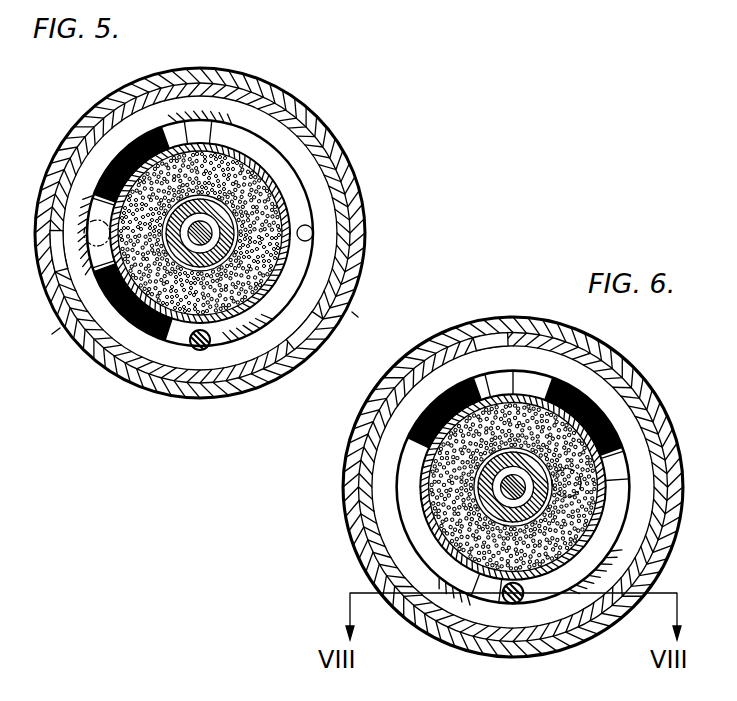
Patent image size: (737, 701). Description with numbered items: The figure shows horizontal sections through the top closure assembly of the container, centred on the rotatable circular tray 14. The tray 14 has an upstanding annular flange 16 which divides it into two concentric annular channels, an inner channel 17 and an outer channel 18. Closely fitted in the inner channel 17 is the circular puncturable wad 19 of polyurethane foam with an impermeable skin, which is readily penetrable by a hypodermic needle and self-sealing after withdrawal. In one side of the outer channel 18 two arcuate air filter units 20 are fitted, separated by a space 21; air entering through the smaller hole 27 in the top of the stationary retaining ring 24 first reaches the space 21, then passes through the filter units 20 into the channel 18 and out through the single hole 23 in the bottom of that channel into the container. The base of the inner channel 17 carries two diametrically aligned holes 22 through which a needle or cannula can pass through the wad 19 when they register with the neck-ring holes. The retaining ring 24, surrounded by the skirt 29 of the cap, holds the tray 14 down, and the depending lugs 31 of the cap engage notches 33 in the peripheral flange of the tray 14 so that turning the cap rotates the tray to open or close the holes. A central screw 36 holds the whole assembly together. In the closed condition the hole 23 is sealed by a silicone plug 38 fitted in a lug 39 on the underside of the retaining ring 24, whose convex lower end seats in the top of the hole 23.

In FIG. 5, the rotatable circular tray 14 is at (106, 350).
In FIG. 5, the upstanding annular flange 16 is at (272, 175).
In FIG. 5, the inner channel 17 is at (237, 160).
In FIG. 5, the outer channel 18 is at (203, 125).
In FIG. 6, the outer channel 18 is at (605, 535).
In FIG. 5, the puncturable wad 19 is at (186, 160).
In FIG. 6, the puncturable wad 19 is at (440, 522).
In FIG. 5, the air filter units 20 is at (115, 165).
In FIG. 6, the air filter units 20 is at (418, 420).
In FIG. 5, the space 21 is at (96, 285).
In FIG. 5, the holes 22 is at (60, 328).
In FIG. 5, the hole 23 is at (313, 232).
In FIG. 5, the stationary retaining ring 24 is at (216, 352).
In FIG. 6, the stationary retaining ring 24 is at (448, 505).
In FIG. 5, the smaller hole 27 is at (86, 240).
In FIG. 5, the skirt 29 is at (262, 352).
In FIG. 6, the skirt 29 is at (620, 372).
In FIG. 5, the depending lugs 31 is at (72, 190).
In FIG. 6, the depending lugs 31 is at (556, 358).
In FIG. 5, the notches 33 is at (68, 252).
In FIG. 6, the notches 33 is at (500, 345).
In FIG. 5, the central screw 36 is at (240, 212).
In FIG. 5, the silicone plug 38 is at (196, 348).
In FIG. 6, the silicone plug 38 is at (506, 602).
In FIG. 5, the lug 39 is at (224, 335).
In FIG. 6, the lug 39 is at (422, 620).